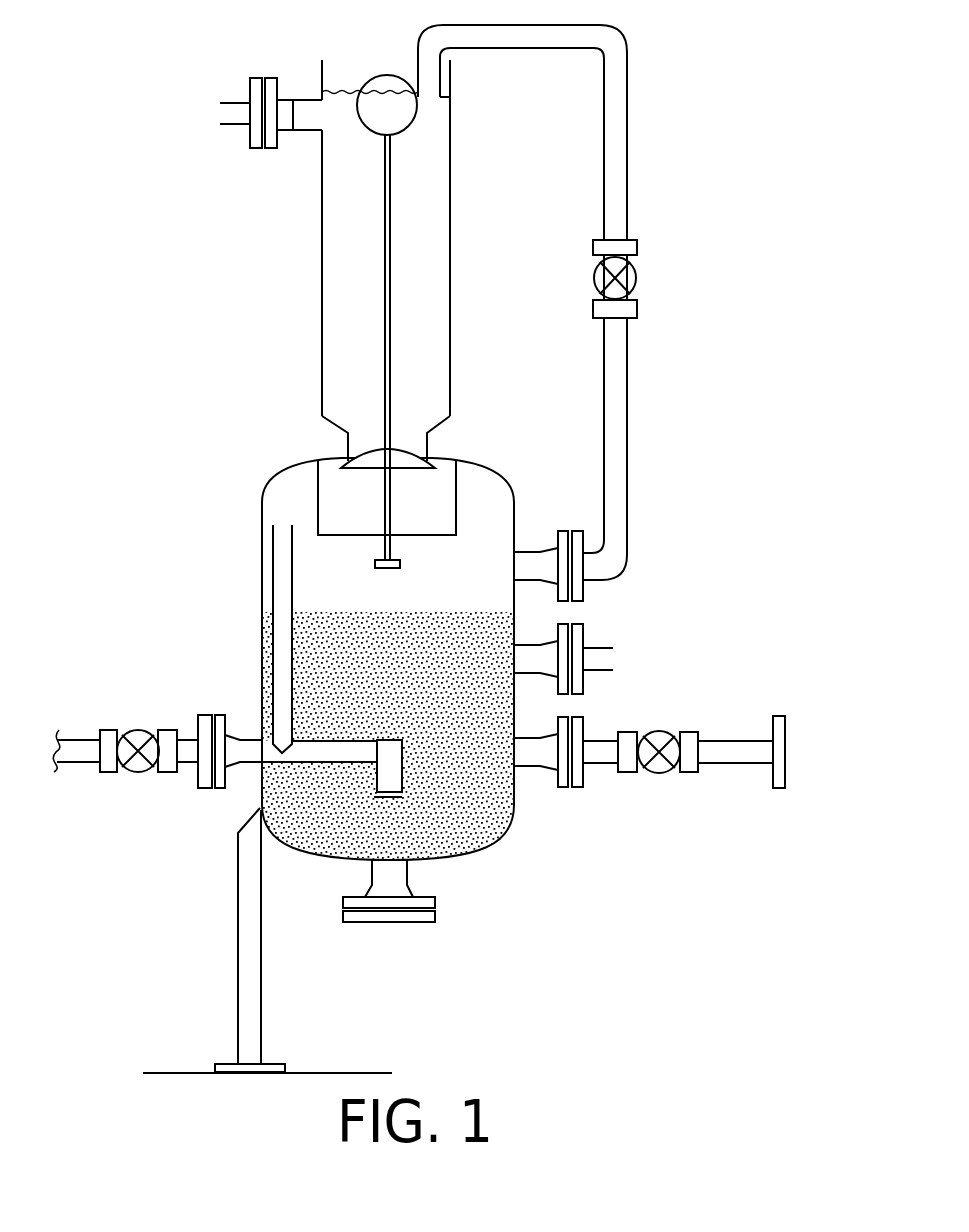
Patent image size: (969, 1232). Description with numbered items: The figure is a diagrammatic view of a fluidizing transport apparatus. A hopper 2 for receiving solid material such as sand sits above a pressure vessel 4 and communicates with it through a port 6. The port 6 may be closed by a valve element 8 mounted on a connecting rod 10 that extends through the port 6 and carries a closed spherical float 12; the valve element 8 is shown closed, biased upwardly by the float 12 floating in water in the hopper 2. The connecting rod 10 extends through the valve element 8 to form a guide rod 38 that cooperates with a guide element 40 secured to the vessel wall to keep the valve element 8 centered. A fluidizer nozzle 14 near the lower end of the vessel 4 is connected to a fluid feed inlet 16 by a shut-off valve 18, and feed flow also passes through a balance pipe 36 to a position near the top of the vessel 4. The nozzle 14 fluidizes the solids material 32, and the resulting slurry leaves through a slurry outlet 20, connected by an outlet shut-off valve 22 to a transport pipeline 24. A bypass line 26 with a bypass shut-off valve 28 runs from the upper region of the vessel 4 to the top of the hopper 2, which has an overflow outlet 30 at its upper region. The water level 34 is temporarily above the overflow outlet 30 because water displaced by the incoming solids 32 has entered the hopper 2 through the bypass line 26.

The hopper 2 is at (322, 282).
The pressure vessel 4 is at (262, 632).
The port 6 is at (347, 449).
The valve element 8 is at (427, 450).
The connecting rod 10 is at (384, 206).
The closed spherical float 12 is at (417, 112).
The fluidizer nozzle 14 is at (402, 778).
The fluid feed inlet 16 is at (80, 766).
The shut-off valve 18 is at (138, 773).
The slurry outlet 20 is at (557, 766).
The outlet shut-off valve 22 is at (660, 738).
The transport pipeline 24 is at (740, 766).
The bypass line 26 is at (628, 405).
The bypass shut-off valve 28 is at (630, 280).
The overflow outlet 30 is at (230, 112).
The solids material 32 is at (317, 677).
The water level 34 is at (362, 91).
The balance pipe 36 is at (273, 543).
The guide rod 38 is at (394, 548).
The guide element 40 is at (318, 489).